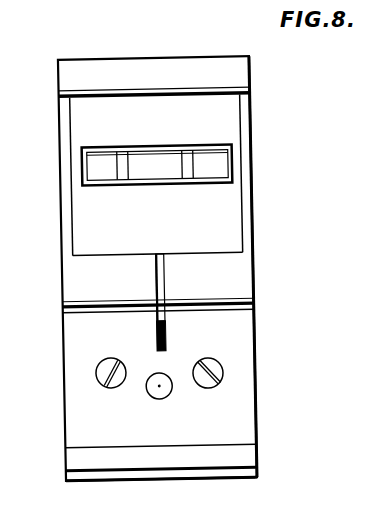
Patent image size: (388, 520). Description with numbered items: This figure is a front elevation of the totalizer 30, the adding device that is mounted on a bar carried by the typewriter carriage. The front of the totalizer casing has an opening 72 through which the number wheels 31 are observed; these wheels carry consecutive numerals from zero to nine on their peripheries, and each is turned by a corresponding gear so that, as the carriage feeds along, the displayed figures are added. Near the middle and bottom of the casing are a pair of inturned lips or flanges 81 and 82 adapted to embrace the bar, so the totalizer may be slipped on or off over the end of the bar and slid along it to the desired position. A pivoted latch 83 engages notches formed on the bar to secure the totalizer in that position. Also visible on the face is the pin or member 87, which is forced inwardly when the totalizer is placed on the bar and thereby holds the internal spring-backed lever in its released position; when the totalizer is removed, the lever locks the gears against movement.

The totalizer 30 is at (67, 286).
The number wheels 31 is at (84, 176).
The opening 72 is at (234, 175).
The inturned lip or flange 81 is at (71, 457).
The inturned lip or flange 82 is at (253, 299).
The pivoted latch 83 is at (155, 332).
The pin or member 87 is at (166, 394).